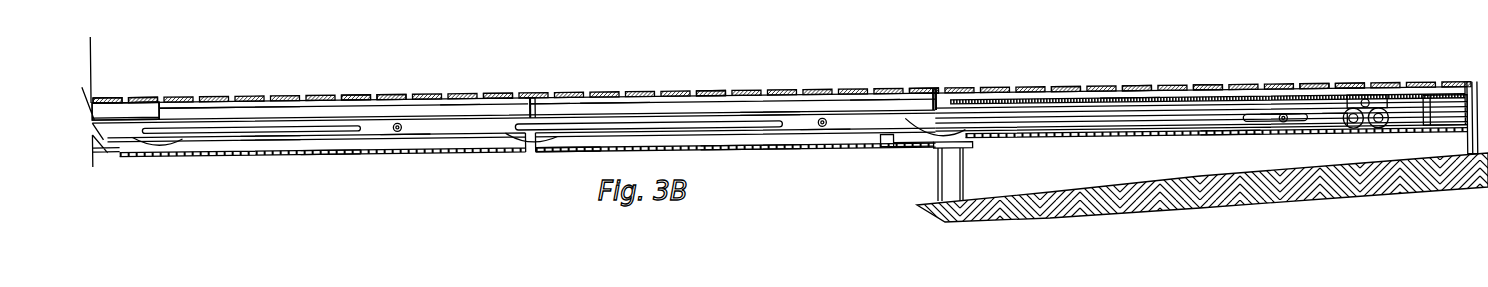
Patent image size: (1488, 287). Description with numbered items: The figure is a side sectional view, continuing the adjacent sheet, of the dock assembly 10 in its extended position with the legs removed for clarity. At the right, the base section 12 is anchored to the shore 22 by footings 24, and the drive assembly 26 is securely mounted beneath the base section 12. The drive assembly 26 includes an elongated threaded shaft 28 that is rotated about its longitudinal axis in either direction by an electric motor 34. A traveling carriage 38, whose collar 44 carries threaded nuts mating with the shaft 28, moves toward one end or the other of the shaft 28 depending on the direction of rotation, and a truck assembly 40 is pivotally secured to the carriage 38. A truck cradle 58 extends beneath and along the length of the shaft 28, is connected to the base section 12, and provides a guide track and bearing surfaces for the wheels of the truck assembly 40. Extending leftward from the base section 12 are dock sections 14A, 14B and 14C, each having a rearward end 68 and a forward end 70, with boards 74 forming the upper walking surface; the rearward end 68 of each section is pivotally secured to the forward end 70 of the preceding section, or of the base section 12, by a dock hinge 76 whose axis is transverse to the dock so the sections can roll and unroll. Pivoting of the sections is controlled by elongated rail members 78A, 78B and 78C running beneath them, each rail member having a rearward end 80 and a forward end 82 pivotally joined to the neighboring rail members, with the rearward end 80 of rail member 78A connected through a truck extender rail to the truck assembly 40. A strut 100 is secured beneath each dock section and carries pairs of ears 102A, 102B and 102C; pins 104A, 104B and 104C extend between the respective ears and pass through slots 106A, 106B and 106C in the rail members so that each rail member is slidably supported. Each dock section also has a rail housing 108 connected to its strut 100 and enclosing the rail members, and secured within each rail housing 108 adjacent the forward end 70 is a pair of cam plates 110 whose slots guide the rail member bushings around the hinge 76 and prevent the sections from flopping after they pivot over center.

The dock assembly 10 is at (797, 31).
The base section 12 is at (1130, 82).
The dock section 14A is at (720, 85).
The dock section 14B is at (357, 88).
The dock section 14C is at (150, 93).
The shore 22 is at (1153, 183).
The footings 24 is at (940, 190).
The drive assembly 26 is at (1350, 83).
The threaded shaft 28 is at (1203, 85).
The electric motor 34 is at (1443, 137).
The traveling carriage 38 is at (1367, 83).
The truck assembly 40 is at (1363, 137).
The collar 44 is at (1303, 83).
The truck cradle 58 is at (1230, 137).
The rearward end 68 is at (93, 62).
The forward end 70 is at (168, 96).
The boards 74 is at (383, 90).
The dock hinge 76 is at (159, 96).
The rail member 78A is at (873, 103).
The rail member 78B is at (458, 100).
The rail member 78C is at (335, 152).
The rearward end 80 is at (390, 133).
The forward end 82 is at (410, 130).
The strut 100 is at (240, 108).
The ears 102A is at (937, 92).
The ears 102B is at (532, 102).
The ears 102C is at (122, 147).
The pin 104A is at (927, 152).
The pin 104B is at (533, 153).
The pin 104C is at (160, 145).
The slot 106A is at (1125, 85).
The slot 106B is at (770, 108).
The slot 106C is at (268, 147).
The rail housing 108 is at (750, 150).
The cam plates 110 is at (540, 153).